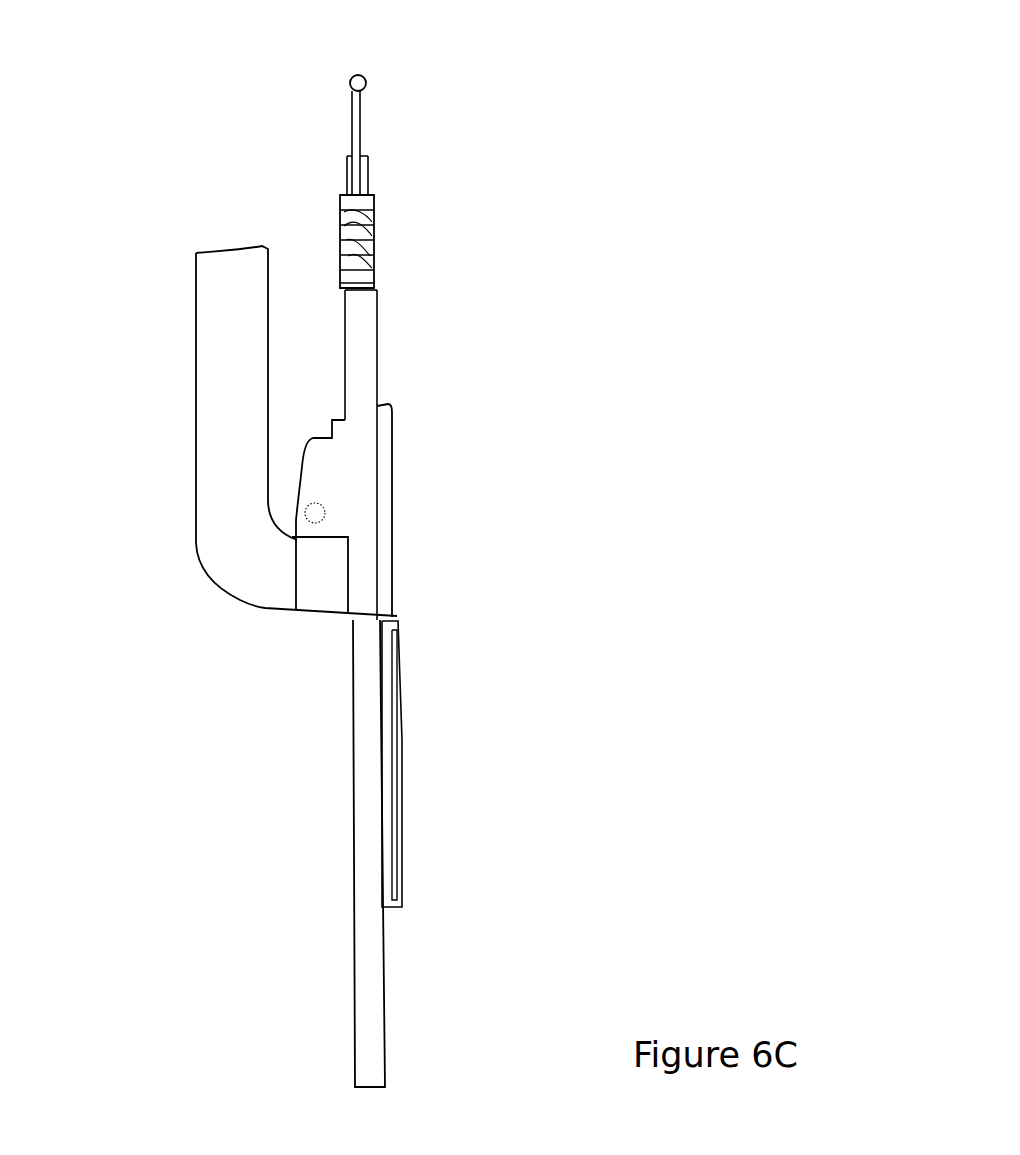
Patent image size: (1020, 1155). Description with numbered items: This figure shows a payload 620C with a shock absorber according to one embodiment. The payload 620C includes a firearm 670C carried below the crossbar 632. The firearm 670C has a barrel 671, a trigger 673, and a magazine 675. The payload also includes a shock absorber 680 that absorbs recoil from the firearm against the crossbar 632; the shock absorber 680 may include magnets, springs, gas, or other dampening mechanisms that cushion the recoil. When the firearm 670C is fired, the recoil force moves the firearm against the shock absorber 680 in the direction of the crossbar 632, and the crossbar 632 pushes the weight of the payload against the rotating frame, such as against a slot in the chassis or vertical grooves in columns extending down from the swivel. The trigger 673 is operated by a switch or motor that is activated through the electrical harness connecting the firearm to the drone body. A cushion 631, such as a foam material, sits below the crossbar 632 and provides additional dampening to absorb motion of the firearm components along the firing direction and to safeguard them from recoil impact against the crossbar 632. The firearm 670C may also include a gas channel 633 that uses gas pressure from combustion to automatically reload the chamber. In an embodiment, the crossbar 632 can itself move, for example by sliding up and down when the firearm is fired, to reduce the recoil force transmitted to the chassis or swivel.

The payload 620C is at (650, 300).
The crossbar 632 is at (365, 74).
The cushion 631 is at (369, 170).
The shock absorber 680 is at (373, 240).
The magazine 675 is at (195, 403).
The firearm 670C is at (293, 510).
The trigger 673 is at (302, 515).
The barrel 671 is at (365, 1018).
The gas channel 633 is at (402, 742).